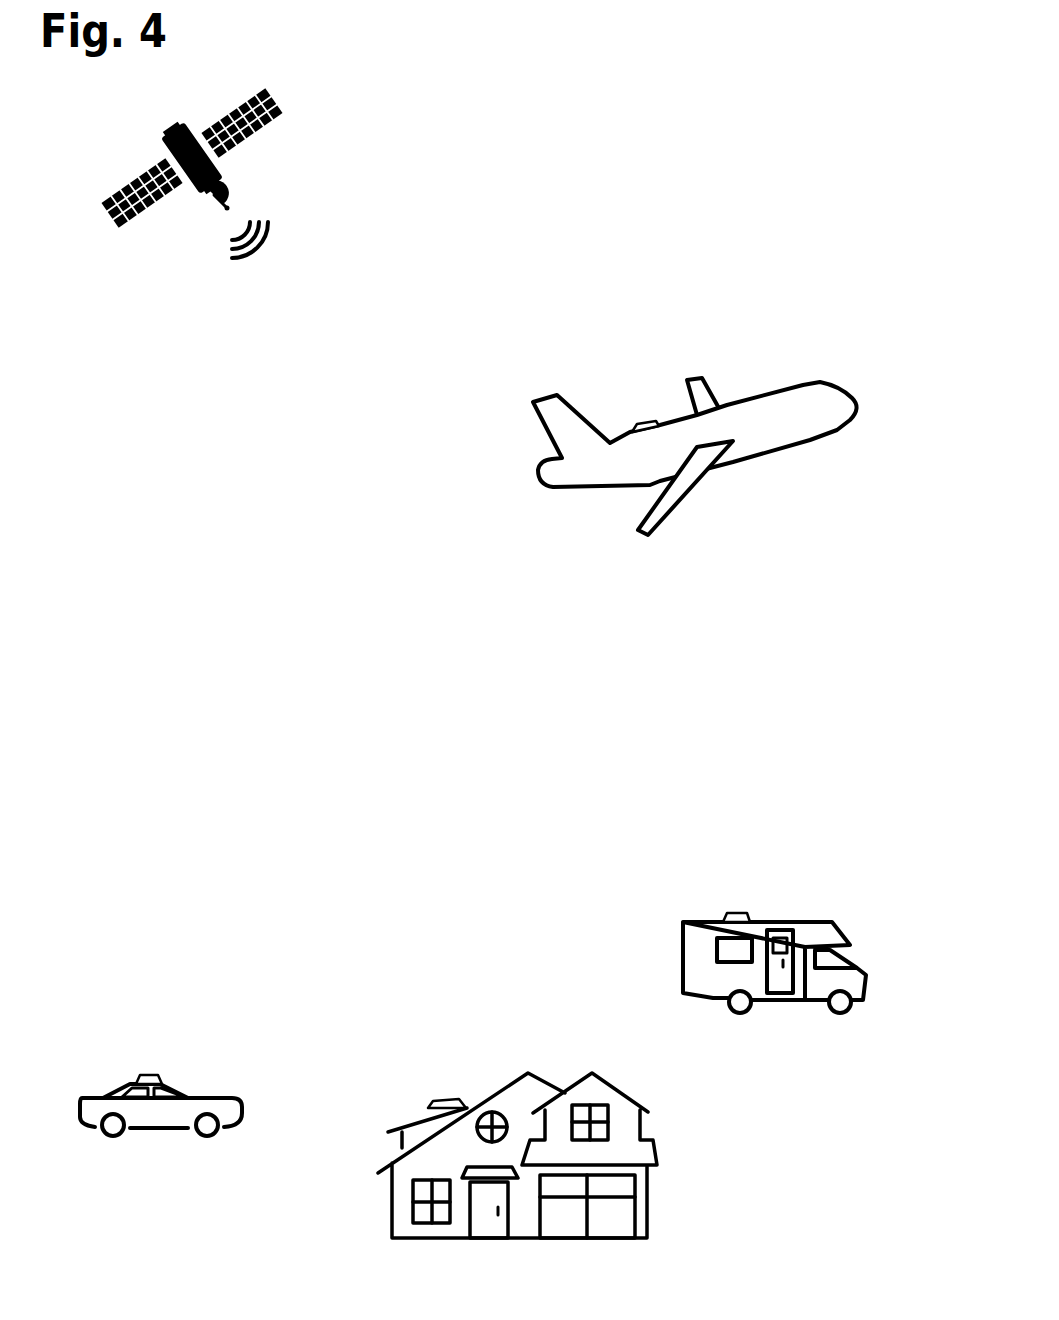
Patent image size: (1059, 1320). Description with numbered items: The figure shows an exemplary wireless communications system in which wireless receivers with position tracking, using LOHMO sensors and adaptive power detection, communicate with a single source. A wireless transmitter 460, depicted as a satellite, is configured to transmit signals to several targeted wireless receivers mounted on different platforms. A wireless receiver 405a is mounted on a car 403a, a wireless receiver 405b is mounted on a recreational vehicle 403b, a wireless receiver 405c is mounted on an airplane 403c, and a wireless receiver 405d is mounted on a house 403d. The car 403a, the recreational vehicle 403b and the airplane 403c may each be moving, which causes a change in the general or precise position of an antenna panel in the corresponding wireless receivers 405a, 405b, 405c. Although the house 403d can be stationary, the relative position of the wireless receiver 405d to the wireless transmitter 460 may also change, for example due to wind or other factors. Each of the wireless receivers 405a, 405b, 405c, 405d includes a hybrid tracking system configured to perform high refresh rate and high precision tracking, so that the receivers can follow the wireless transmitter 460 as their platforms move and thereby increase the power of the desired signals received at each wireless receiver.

The wireless transmitter 460 is at (163, 131).
The car 403a is at (153, 1074).
The recreational vehicle 403b is at (767, 934).
The airplane 403c is at (702, 433).
The house 403d is at (551, 1136).
The wireless receiver 405a is at (156, 1065).
The wireless receiver 405b is at (736, 905).
The wireless receiver 405c is at (637, 417).
The wireless receiver 405d is at (441, 1091).